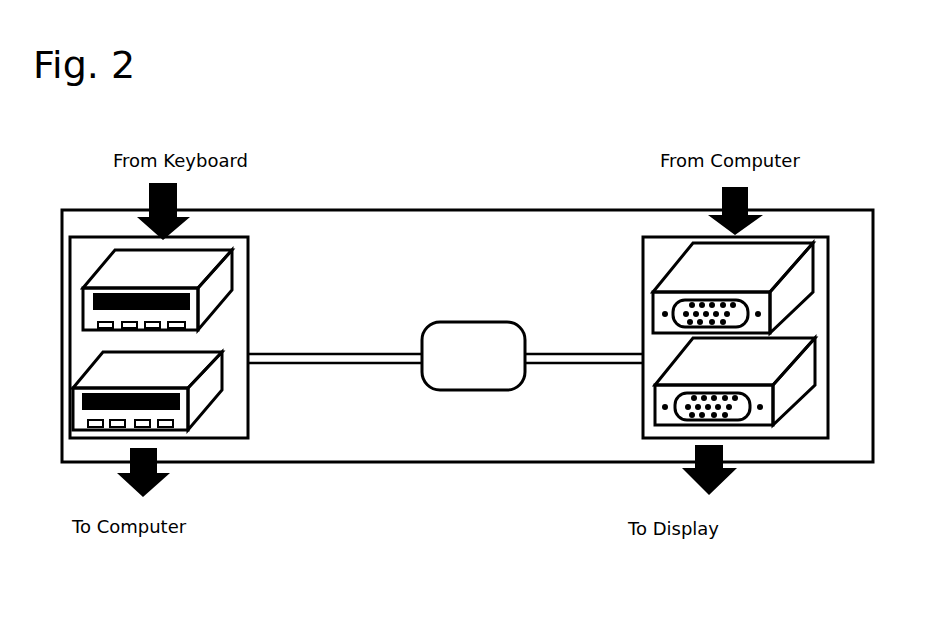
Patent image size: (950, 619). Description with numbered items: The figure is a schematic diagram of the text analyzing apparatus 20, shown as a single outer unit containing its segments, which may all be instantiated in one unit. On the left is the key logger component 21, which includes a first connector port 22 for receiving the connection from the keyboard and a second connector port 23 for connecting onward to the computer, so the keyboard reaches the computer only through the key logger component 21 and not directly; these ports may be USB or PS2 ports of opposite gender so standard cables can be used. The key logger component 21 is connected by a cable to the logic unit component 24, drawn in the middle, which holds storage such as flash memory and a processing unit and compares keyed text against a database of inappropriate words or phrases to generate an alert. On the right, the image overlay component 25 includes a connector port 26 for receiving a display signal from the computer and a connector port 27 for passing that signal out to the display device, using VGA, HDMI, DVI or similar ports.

The text analyzing apparatus 20 is at (737, 462).
The key logger component 21 is at (248, 403).
The first connector port 22 is at (235, 273).
The second connector port 23 is at (200, 420).
The logic unit component 24 is at (488, 390).
The image overlay component 25 is at (793, 440).
The connector port for receiving a display signal from the computer 26 is at (663, 280).
The connector port for providing the display signal to the display device 27 is at (655, 395).